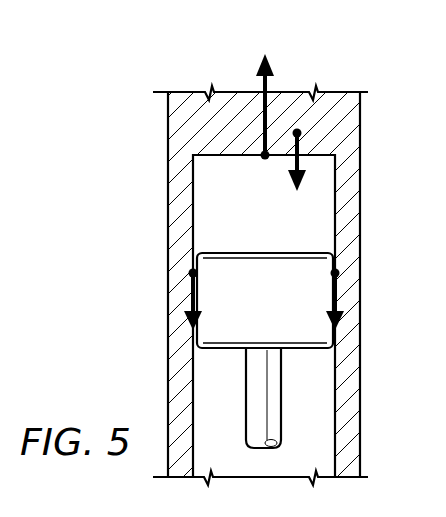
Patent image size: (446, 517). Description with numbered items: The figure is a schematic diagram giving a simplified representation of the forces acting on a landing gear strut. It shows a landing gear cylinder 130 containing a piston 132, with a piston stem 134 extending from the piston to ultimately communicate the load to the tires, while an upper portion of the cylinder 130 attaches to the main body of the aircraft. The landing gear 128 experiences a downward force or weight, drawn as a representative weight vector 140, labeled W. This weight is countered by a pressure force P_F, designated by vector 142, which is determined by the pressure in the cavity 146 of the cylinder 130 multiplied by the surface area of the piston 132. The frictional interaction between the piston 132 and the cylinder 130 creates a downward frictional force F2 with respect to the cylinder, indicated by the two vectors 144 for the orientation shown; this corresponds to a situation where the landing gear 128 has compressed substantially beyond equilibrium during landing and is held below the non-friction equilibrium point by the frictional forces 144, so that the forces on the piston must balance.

The landing gear 128 is at (132, 252).
The landing gear cylinder 130 is at (352, 212).
The piston 132 is at (283, 291).
The piston stem 134 is at (281, 385).
The weight vector 140 is at (293, 160).
The pressure force vector 142 is at (268, 83).
The frictional force vectors 144 is at (192, 298).
The cavity 146 is at (217, 220).